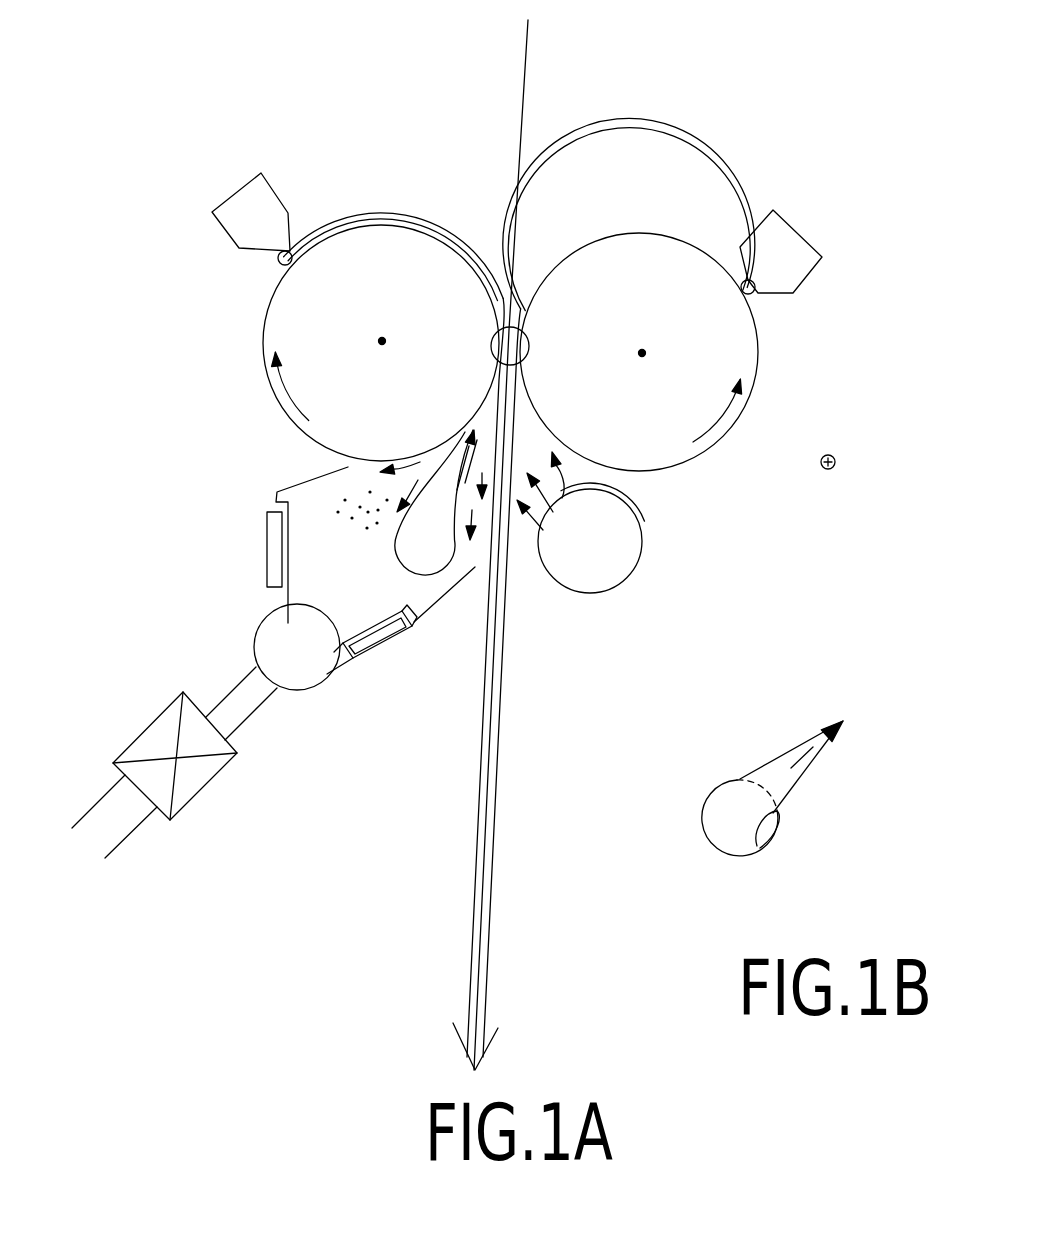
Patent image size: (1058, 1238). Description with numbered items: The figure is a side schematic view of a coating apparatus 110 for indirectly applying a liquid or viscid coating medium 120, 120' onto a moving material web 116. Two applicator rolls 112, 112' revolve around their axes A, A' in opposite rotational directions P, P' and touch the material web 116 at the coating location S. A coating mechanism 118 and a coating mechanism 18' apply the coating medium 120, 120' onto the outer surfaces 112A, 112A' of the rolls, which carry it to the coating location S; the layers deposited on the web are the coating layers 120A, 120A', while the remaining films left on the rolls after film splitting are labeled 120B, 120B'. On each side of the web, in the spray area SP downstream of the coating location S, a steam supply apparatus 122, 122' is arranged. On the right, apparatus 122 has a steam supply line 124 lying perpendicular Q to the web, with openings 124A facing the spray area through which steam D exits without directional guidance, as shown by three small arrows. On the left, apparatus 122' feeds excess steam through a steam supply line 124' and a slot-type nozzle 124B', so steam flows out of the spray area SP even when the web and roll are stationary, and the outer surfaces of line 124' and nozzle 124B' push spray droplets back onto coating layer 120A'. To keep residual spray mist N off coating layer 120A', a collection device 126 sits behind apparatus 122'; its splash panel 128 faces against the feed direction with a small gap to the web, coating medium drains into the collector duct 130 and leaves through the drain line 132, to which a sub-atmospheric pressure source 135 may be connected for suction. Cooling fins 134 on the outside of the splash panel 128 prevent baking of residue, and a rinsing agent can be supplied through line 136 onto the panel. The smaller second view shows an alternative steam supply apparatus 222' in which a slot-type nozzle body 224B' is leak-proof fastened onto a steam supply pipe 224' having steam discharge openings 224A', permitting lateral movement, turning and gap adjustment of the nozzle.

In FIG. 1A, the coating apparatus 110 is at (698, 90).
In FIG. 1A, the applicator roll 112 is at (639, 306).
In FIG. 1A, the applicator roll 112' is at (381, 266).
In FIG. 1A, the outer surface of applicator roll 112A is at (820, 359).
In FIG. 1A, the outer surface of applicator roll 112A' is at (189, 345).
In FIG. 1A, the material web 116 is at (525, 105).
In FIG. 1A, the coating mechanism 118 is at (803, 240).
In FIG. 1A, the coating mechanism 18' is at (252, 170).
In FIG. 1A, the coating medium 120 is at (629, 211).
In FIG. 1A, the coating medium 120' is at (394, 206).
In FIG. 1A, the coating layer 120A is at (554, 683).
In FIG. 1A, the coating layer 120A' is at (411, 678).
In FIG. 1A, the remaining coating layer 120B is at (715, 487).
In FIG. 1A, the remaining coating layer 120B' is at (405, 415).
In FIG. 1A, the steam supply apparatus 122 is at (667, 511).
In FIG. 1A, the steam supply apparatus 122' is at (238, 545).
In FIG. 1A, the steam supply line 124 is at (640, 557).
In FIG. 1A, the steam supply line 124' is at (433, 615).
In FIG. 1A, the openings 124A is at (560, 527).
In FIG. 1A, the slot-type nozzle 124B' is at (430, 715).
In FIG. 1A, the collection device 126 is at (254, 641).
In FIG. 1A, the splash panel 128 is at (367, 635).
In FIG. 1A, the collector duct 130 is at (302, 672).
In FIG. 1A, the drain line 132 is at (105, 830).
In FIG. 1A, the cooling fins 134 is at (360, 660).
In FIG. 1A, the sub-atmospheric pressure source 135 is at (188, 780).
In FIG. 1A, the rinsing agent line 136 is at (412, 628).
In FIG. 1B, the steam supply apparatus 222' is at (857, 645).
In FIG. 1B, the steam supply pipe 224' is at (700, 848).
In FIG. 1B, the steam discharge openings 224A' is at (763, 872).
In FIG. 1B, the slot-type nozzle body 224B' is at (774, 754).
In FIG. 1A, the axis A is at (650, 320).
In FIG. 1A, the axis A' is at (378, 302).
In FIG. 1A, the rotational direction arrow P is at (717, 391).
In FIG. 1A, the rotational direction arrow P' is at (312, 386).
In FIG. 1A, the coating location S is at (491, 343).
In FIG. 1A, the spray area SP is at (530, 427).
In FIG. 1A, the residual spray mist N is at (367, 517).
In FIG. 1A, the steam D is at (644, 521).
In FIG. 1A, the perpendicular direction Q is at (834, 470).